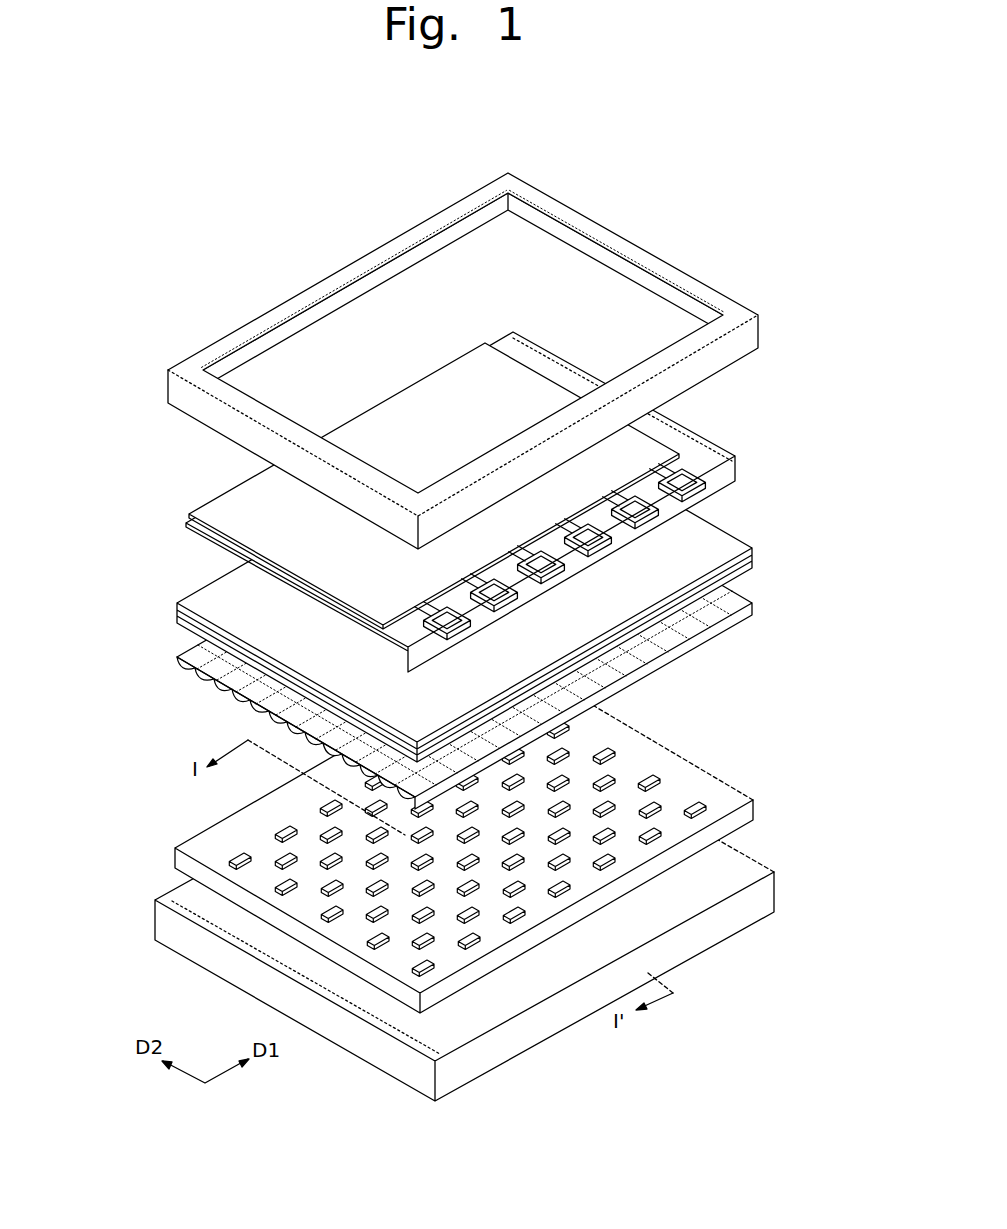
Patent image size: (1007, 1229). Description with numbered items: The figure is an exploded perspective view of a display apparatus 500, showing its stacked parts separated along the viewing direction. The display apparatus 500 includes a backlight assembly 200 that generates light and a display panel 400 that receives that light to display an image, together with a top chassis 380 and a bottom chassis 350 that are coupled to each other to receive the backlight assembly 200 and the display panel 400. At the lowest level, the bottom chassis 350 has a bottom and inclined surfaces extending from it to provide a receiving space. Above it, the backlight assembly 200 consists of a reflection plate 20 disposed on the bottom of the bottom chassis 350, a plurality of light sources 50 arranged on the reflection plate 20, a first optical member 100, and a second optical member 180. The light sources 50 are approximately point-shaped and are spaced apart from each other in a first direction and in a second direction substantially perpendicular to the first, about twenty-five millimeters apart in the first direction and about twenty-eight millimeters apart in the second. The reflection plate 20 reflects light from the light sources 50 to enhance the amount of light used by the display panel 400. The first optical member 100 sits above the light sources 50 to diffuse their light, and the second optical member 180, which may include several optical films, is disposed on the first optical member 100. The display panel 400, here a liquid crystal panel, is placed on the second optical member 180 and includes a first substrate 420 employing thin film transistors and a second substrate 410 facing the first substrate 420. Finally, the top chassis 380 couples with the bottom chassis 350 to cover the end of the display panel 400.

The display apparatus 500 is at (457, 625).
The top chassis 380 is at (200, 351).
The display panel 400 is at (525, 502).
The second substrate 410 is at (657, 450).
The first substrate 420 is at (693, 443).
The backlight assembly 200 is at (402, 711).
The second optical member 180 is at (425, 585).
The first optical member 100 is at (192, 651).
The light sources 50 is at (233, 862).
The reflection plate 20 is at (180, 841).
The bottom chassis 350 is at (174, 891).